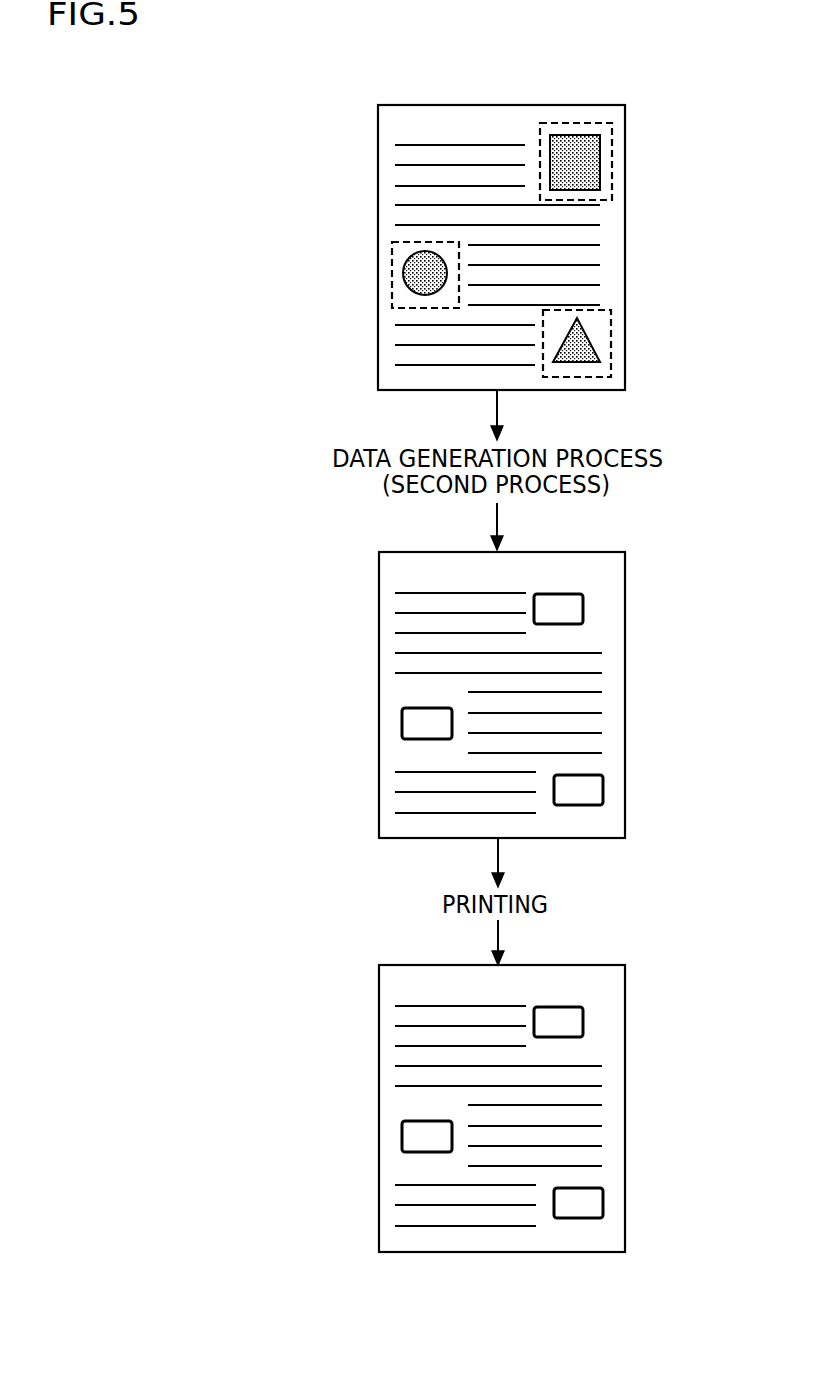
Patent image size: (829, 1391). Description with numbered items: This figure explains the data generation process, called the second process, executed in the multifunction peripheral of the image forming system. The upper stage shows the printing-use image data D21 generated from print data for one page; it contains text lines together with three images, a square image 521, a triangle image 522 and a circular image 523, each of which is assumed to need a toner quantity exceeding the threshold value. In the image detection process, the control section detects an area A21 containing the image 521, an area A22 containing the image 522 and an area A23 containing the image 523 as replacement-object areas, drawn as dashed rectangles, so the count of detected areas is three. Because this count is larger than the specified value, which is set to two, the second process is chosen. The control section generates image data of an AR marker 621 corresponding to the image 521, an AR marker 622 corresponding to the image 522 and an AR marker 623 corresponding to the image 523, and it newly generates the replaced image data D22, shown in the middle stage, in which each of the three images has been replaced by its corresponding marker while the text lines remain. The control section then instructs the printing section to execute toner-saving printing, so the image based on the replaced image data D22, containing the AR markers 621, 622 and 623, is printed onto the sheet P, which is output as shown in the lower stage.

The printing-use image data D21 is at (633, 110).
The image 521 is at (600, 160).
The area A21 is at (612, 190).
The image 523 is at (403, 273).
The area A23 is at (392, 300).
The image 522 is at (595, 337).
The area A22 is at (612, 368).
The replaced image data D22 is at (633, 558).
The AR marker 621 is at (583, 609).
The AR marker 623 is at (402, 724).
The AR marker 622 is at (603, 790).
The sheet P is at (633, 971).